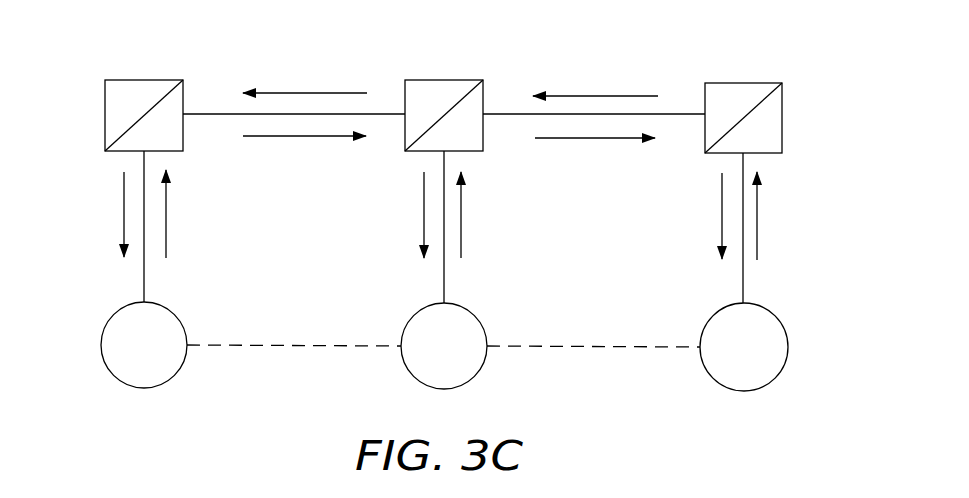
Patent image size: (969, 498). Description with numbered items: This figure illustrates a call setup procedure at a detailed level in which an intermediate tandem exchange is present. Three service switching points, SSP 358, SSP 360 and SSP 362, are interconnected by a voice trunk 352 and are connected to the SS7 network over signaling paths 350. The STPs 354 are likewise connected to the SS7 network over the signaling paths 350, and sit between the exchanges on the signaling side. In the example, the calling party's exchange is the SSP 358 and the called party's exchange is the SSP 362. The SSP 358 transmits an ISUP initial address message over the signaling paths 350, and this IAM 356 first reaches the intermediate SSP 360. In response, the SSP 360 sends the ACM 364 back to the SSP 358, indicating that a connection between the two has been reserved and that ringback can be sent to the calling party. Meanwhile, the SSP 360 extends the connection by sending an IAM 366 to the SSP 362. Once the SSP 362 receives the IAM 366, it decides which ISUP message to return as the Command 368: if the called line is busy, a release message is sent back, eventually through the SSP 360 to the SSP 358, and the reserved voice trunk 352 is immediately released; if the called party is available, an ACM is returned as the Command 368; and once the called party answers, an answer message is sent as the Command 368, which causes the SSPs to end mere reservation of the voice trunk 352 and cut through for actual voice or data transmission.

The signaling paths 350 is at (515, 112).
The voice trunk 352 is at (530, 348).
The STPs 354 is at (130, 80).
The IAM 356 is at (208, 212).
The SSP 358 is at (130, 388).
The SSP 360 is at (457, 386).
The SSP 362 is at (755, 388).
The ACM 364 is at (277, 92).
The IAM 366 is at (722, 225).
The Command 368 is at (563, 92).